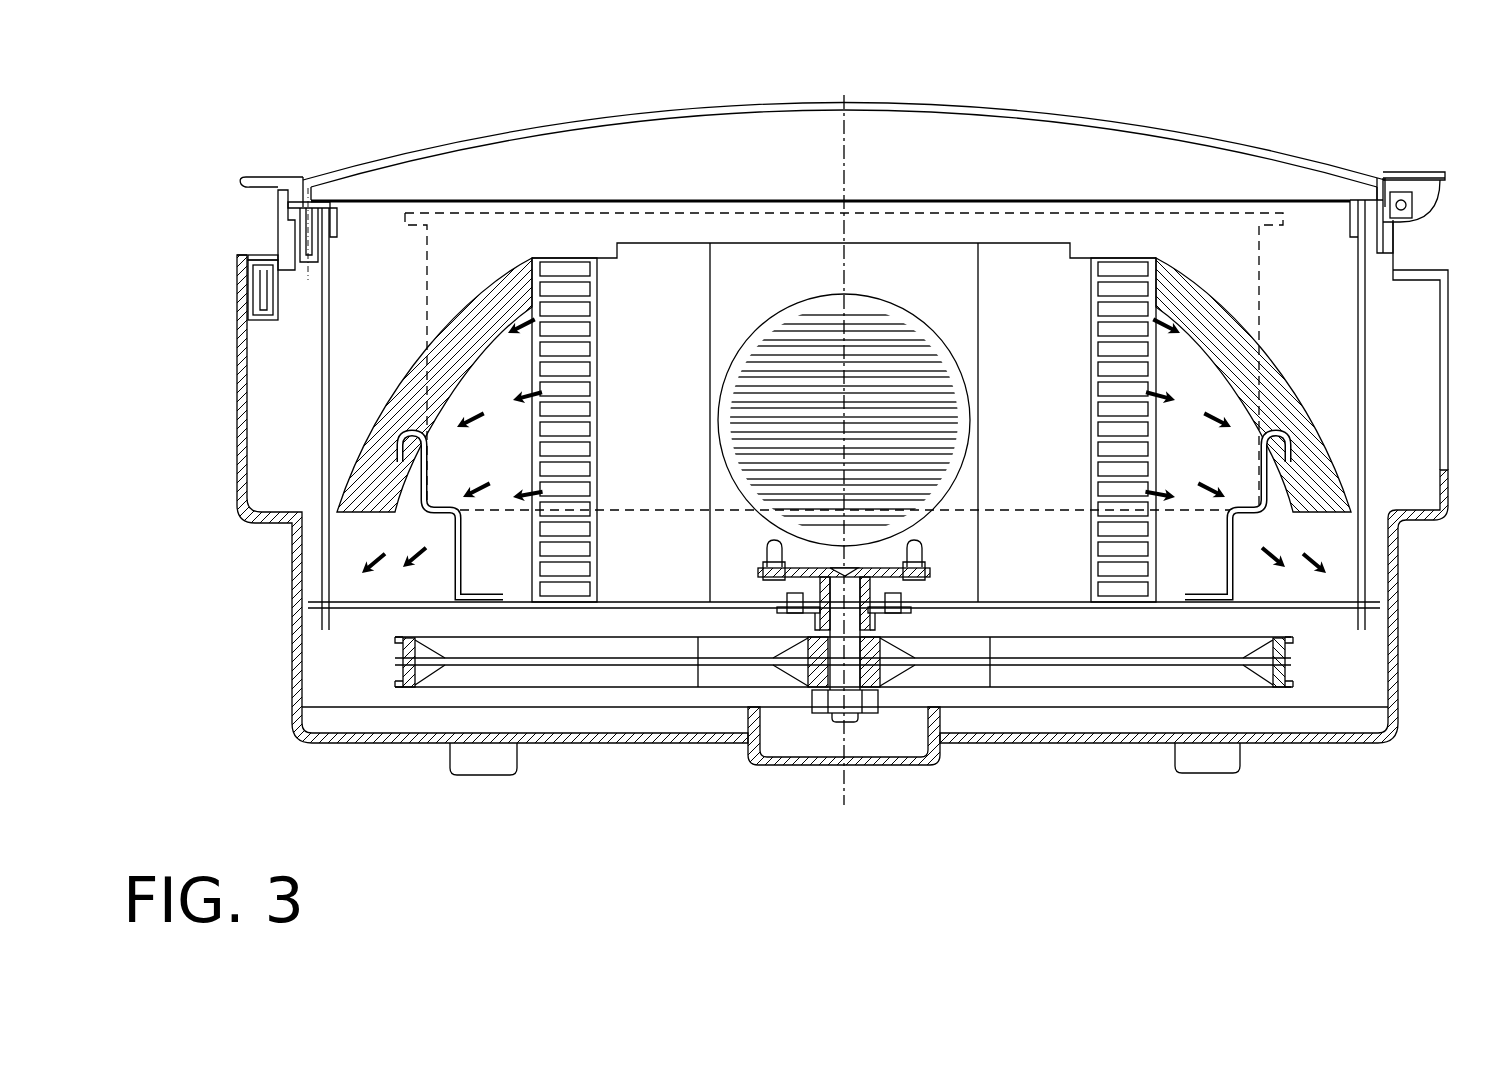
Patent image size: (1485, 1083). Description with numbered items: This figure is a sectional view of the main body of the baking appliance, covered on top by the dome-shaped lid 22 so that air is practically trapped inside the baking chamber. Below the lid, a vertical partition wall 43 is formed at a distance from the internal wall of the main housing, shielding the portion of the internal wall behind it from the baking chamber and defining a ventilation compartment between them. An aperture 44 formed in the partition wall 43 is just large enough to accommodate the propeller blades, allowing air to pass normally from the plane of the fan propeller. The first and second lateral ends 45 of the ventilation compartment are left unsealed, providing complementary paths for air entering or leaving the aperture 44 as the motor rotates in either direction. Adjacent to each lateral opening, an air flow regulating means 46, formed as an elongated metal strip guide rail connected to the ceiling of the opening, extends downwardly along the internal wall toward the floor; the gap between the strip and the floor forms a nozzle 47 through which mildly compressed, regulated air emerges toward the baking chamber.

The lid 22 is at (1257, 147).
The vertical partition wall 43 is at (740, 287).
The aperture 44 is at (885, 385).
The lateral ends 45 is at (582, 330).
The air flow regulating means 46 is at (452, 310).
The nozzle 47 is at (348, 533).